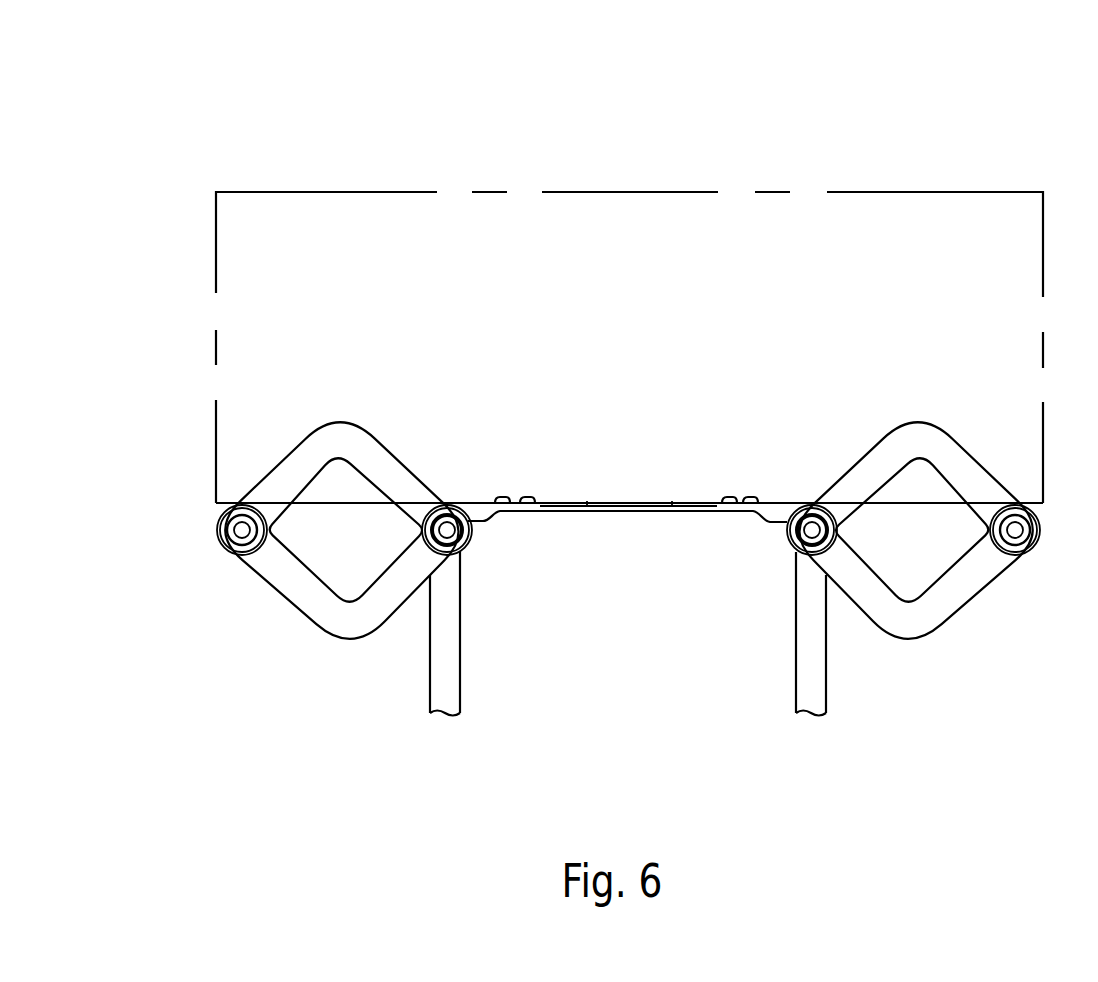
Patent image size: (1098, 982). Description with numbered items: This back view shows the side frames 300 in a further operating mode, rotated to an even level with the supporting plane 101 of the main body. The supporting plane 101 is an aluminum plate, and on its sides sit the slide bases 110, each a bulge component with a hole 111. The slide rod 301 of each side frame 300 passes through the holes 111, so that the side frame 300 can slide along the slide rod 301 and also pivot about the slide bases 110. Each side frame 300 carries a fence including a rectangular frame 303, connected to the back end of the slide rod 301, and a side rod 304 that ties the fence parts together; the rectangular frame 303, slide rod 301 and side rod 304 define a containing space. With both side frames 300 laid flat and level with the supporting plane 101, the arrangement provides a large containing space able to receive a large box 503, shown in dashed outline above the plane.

The large box 503 is at (648, 238).
The hole 111 is at (462, 498).
The slide base 110 is at (472, 533).
The slide rod 301 is at (472, 541).
The side rod 304 is at (232, 538).
The supporting plane 101 is at (702, 512).
The rectangular frame 303 is at (912, 620).
The side frame 300 is at (926, 602).